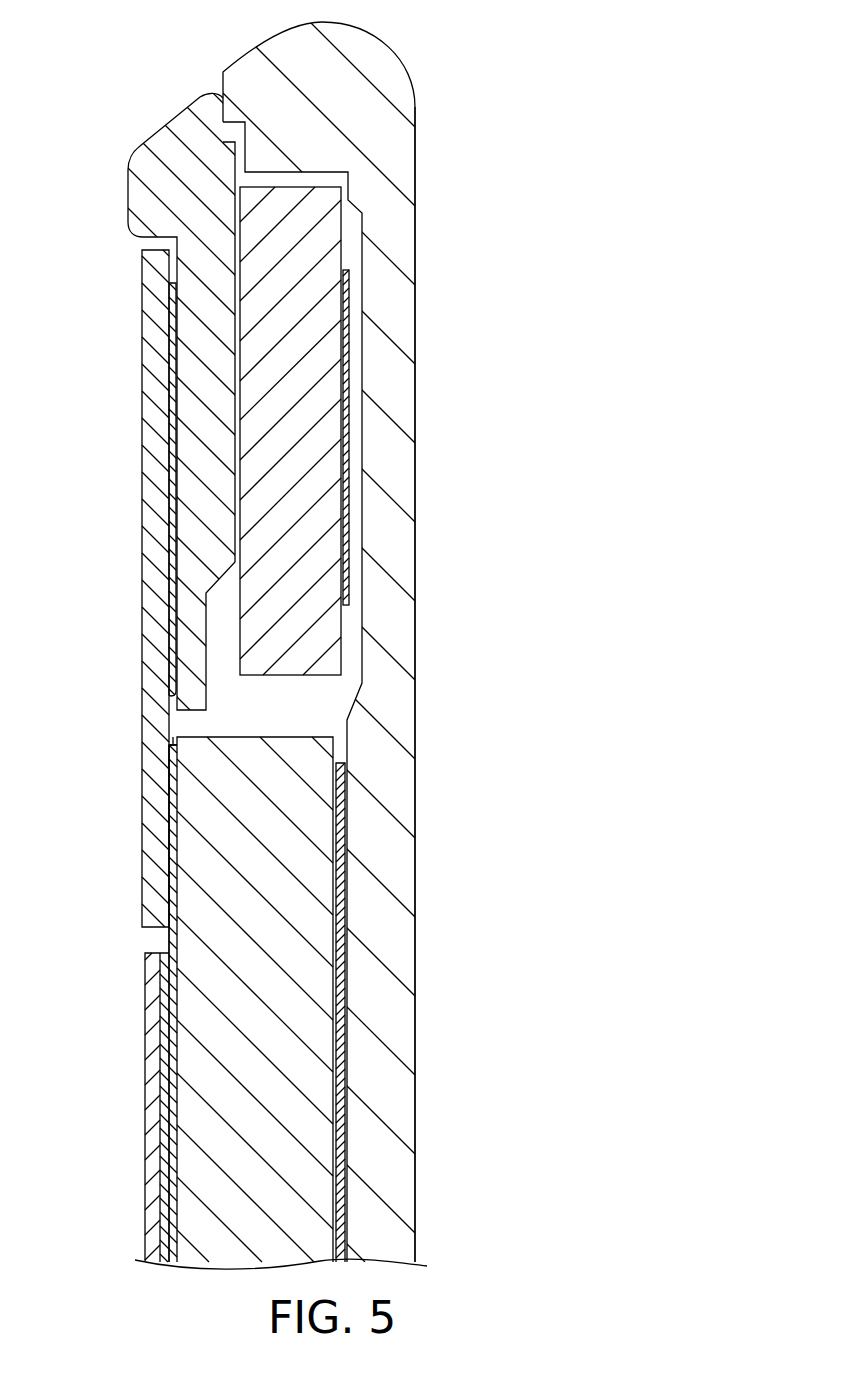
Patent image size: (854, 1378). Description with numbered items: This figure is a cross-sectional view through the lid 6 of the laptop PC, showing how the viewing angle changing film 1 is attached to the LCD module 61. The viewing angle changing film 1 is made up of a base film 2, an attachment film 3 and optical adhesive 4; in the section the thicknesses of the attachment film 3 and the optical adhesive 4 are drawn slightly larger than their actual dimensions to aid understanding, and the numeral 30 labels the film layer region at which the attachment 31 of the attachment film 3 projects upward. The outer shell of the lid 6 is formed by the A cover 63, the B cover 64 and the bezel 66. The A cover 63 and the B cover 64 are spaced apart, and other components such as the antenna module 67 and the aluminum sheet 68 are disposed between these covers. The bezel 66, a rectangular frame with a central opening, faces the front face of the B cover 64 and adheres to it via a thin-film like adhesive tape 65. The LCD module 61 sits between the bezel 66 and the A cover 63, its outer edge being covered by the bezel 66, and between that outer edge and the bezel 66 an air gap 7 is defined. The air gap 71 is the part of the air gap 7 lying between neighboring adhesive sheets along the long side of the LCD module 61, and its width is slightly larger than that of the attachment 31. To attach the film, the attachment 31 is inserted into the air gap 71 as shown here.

The viewing angle changing film 1 is at (137, 1034).
The base film 2 is at (150, 1230).
The attachment film 3 is at (173, 1265).
The optical adhesive 4 is at (163, 1262).
The coating portion 30 is at (173, 1073).
The attachment 31 is at (172, 840).
The lid 6 is at (428, 66).
The LCD module 61 is at (228, 735).
The A cover 63 is at (417, 203).
The B cover 64 is at (150, 140).
The adhesive tape 65 is at (168, 700).
The bezel 66 is at (141, 300).
The antenna module 67 is at (290, 676).
The aluminum sheet 68 is at (352, 607).
The air gap 7 is at (103, 734).
The air gap 71 is at (170, 728).